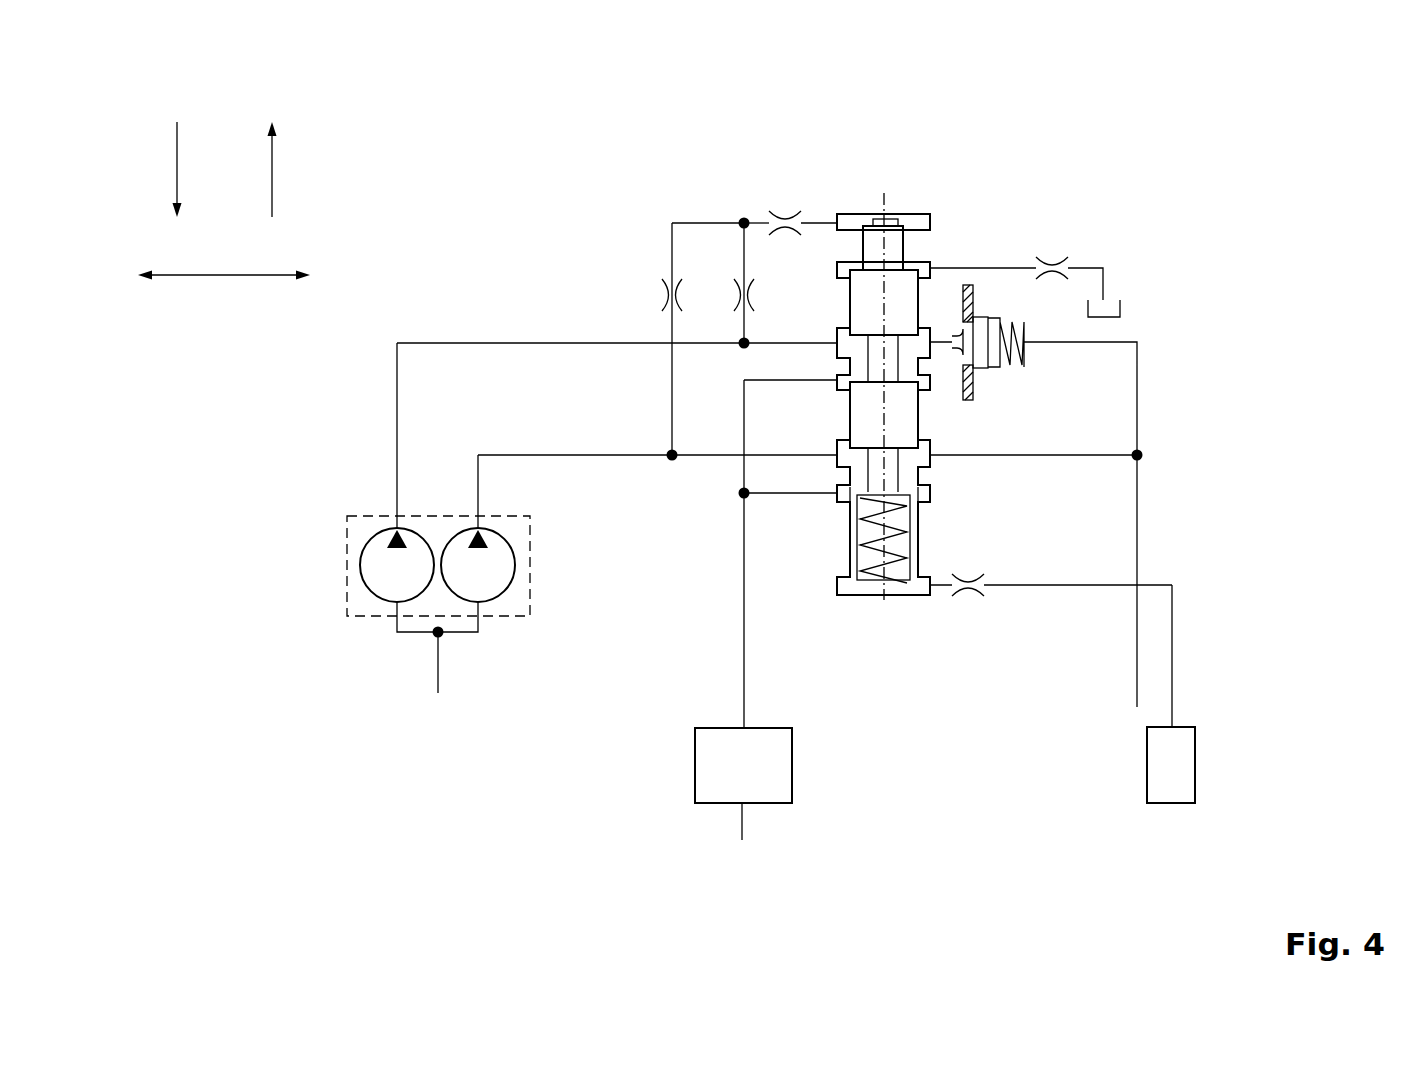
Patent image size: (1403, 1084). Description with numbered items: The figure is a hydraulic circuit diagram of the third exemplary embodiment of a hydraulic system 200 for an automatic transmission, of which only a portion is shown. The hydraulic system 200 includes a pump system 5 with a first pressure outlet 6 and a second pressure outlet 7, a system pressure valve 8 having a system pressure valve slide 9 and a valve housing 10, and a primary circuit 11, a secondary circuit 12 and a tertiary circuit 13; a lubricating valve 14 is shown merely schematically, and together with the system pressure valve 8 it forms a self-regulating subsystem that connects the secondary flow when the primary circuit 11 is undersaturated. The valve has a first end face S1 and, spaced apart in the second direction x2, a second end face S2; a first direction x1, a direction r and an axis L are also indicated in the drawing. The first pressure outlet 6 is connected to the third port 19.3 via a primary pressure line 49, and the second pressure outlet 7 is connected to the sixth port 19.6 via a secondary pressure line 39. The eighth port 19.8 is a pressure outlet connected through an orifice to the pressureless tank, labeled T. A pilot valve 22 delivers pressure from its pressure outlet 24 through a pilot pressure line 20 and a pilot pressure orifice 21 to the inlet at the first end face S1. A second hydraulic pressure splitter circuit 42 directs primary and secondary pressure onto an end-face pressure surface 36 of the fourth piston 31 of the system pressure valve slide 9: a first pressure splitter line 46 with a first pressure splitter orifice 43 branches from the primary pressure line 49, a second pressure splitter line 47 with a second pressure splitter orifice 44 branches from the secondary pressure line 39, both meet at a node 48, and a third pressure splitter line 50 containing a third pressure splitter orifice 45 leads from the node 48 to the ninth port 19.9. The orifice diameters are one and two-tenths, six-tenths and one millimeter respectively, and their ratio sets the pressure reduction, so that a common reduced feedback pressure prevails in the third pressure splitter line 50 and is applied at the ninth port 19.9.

The hydraulic system 200 is at (380, 158).
The pump system 5 is at (335, 576).
The first pressure outlet 6 is at (478, 515).
The second pressure outlet 7 is at (397, 515).
The system pressure valve 8 is at (919, 173).
The system pressure valve slide 9 is at (918, 463).
The valve housing 10 is at (930, 473).
The primary circuit 11 is at (1137, 532).
The secondary circuit 12 is at (742, 840).
The tertiary circuit 13 is at (437, 668).
The lubricating valve 14 is at (772, 788).
The third port 19.3 is at (838, 472).
The sixth port 19.6 is at (833, 343).
The eighth port 19.8 is at (933, 267).
The ninth port 19.9 is at (837, 223).
The pilot pressure line 20 is at (1037, 587).
The pilot pressure orifice 21 is at (977, 616).
The pilot valve 22 is at (1188, 752).
The pressure outlet 24 is at (1173, 727).
The fourth piston 31 is at (897, 238).
The end-face pressure surface 36 is at (863, 227).
The secondary pressure line 39 is at (460, 333).
The second hydraulic pressure splitter circuit 42 is at (665, 203).
The first pressure splitter orifice 43 is at (648, 292).
The second pressure splitter orifice 44 is at (720, 308).
The third pressure splitter orifice 45 is at (774, 208).
The first pressure splitter line 46 is at (670, 368).
The second pressure splitter line 47 is at (735, 256).
The node 48 is at (740, 220).
The primary pressure line 49 is at (577, 455).
The third pressure splitter line 50 is at (833, 222).
The first end face S1 is at (858, 617).
The second end face S2 is at (840, 202).
The longitudinal axis L is at (886, 203).
The tank T is at (1120, 305).
The first axial direction x1 is at (191, 169).
The second direction x2 is at (286, 169).
The radial direction r is at (224, 260).